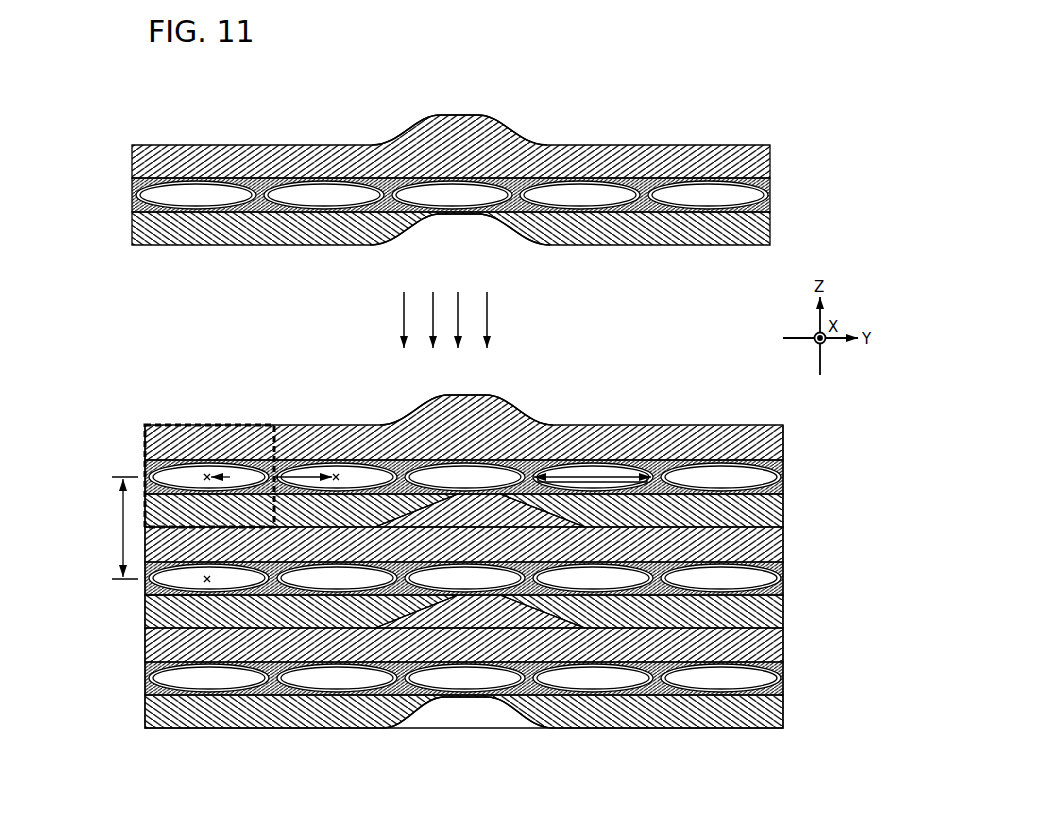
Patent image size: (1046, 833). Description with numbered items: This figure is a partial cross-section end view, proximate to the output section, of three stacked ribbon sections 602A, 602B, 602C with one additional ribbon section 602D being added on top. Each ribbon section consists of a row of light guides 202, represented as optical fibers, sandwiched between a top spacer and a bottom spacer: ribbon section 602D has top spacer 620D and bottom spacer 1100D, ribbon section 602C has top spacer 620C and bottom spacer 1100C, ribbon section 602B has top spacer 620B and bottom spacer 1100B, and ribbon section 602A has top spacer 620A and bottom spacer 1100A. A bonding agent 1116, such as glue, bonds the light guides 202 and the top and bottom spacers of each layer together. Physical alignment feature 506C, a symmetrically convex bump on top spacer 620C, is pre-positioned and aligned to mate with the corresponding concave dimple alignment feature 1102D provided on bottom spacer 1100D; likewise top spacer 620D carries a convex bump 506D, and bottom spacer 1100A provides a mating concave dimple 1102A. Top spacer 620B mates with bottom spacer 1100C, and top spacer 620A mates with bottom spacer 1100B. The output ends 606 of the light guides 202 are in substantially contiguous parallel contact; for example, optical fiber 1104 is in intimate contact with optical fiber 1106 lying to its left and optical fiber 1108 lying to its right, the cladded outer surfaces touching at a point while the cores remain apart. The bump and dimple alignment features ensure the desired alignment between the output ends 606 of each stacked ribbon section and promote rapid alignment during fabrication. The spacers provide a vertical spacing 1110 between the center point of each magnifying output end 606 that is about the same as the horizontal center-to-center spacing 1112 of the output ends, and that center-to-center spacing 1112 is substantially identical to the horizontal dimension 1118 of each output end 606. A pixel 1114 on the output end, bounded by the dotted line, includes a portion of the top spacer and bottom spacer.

The physical alignment feature 506D is at (433, 124).
The output end 606 is at (601, 194).
The top spacer 620D is at (770, 158).
The ribbon section 602D is at (777, 190).
The bottom spacer 1100D is at (770, 232).
The physical alignment feature 1102D is at (504, 216).
The center to center spacing 1112 is at (230, 477).
The pixel 1114 is at (258, 426).
The physical alignment feature 506C is at (434, 408).
The horizontal dimension 1118 is at (553, 476).
The top spacer 620C is at (783, 441).
The ribbon section 602C is at (790, 474).
The bottom spacer 1100C is at (783, 509).
The vertical spacing 1110 is at (118, 539).
The top spacer 620B is at (783, 547).
The ribbon section 602B is at (790, 578).
The bonding agent 1116 is at (145, 595).
The bottom spacer 1100B is at (783, 611).
The top spacer 620A is at (783, 651).
The light guide 202 is at (144, 673).
The ribbon section 602A is at (790, 680).
The bottom spacer 1100A is at (783, 721).
The optical fiber 1106 is at (208, 675).
The optical fiber 1104 is at (327, 675).
The optical fiber 1108 is at (450, 676).
The physical alignment feature 1102A is at (520, 708).